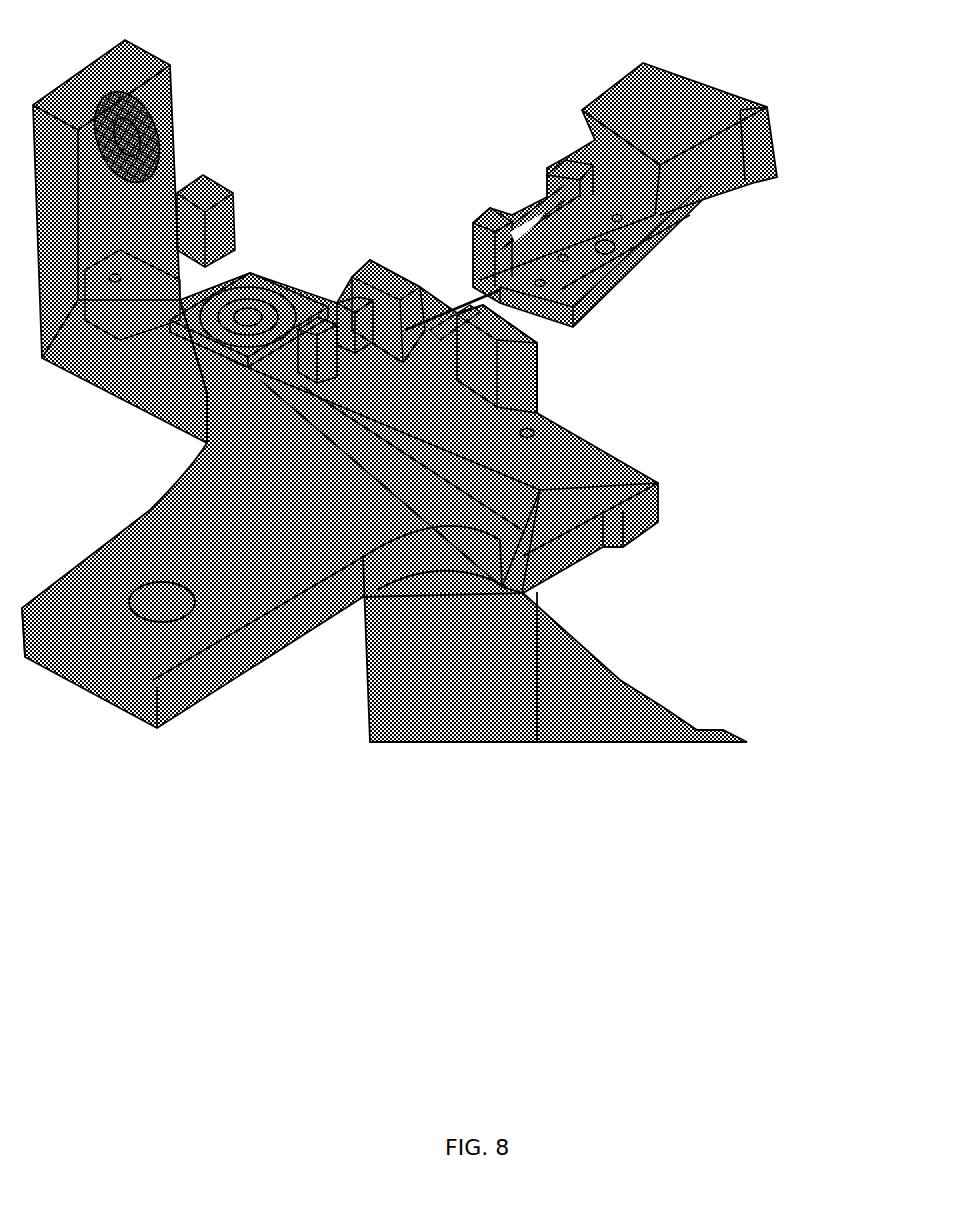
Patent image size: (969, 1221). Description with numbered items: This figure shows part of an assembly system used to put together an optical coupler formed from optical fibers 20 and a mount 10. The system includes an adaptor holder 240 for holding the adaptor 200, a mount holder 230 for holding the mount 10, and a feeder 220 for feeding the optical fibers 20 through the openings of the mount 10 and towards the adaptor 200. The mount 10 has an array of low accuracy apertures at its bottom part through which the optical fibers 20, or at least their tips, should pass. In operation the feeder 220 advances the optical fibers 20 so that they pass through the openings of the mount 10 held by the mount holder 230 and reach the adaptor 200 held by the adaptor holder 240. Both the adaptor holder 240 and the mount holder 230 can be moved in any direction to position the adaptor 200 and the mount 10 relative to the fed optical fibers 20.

The mount 10 is at (474, 333).
The optical fibers 20 is at (477, 297).
The adaptor 200 is at (340, 494).
The feeder 220 is at (667, 63).
The mount holder 230 is at (545, 403).
The adaptor holder 240 is at (185, 465).